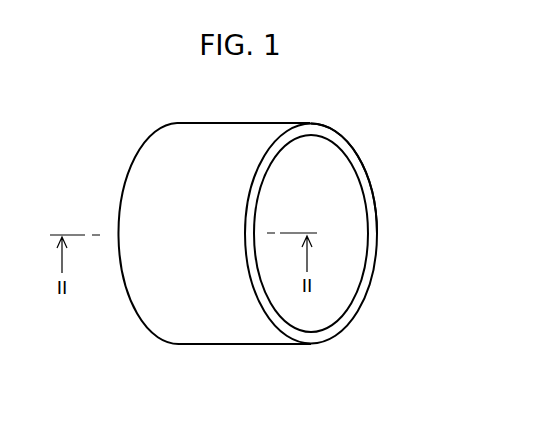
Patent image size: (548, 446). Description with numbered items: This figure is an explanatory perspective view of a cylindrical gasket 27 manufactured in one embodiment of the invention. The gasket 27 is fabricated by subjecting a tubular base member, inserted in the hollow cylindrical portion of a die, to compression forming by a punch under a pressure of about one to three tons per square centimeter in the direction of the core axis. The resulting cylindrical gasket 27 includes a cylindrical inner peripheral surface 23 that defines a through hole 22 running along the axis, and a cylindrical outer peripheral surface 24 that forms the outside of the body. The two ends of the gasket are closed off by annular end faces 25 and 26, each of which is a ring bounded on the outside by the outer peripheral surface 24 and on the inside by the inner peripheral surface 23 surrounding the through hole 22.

The through hole 22 is at (341, 200).
The cylindrical inner peripheral surface 23 is at (350, 228).
The cylindrical outer peripheral surface 24 is at (228, 136).
The annular end face 25 is at (314, 338).
The annular end face 26 is at (128, 172).
The cylindrical gasket 27 is at (372, 163).